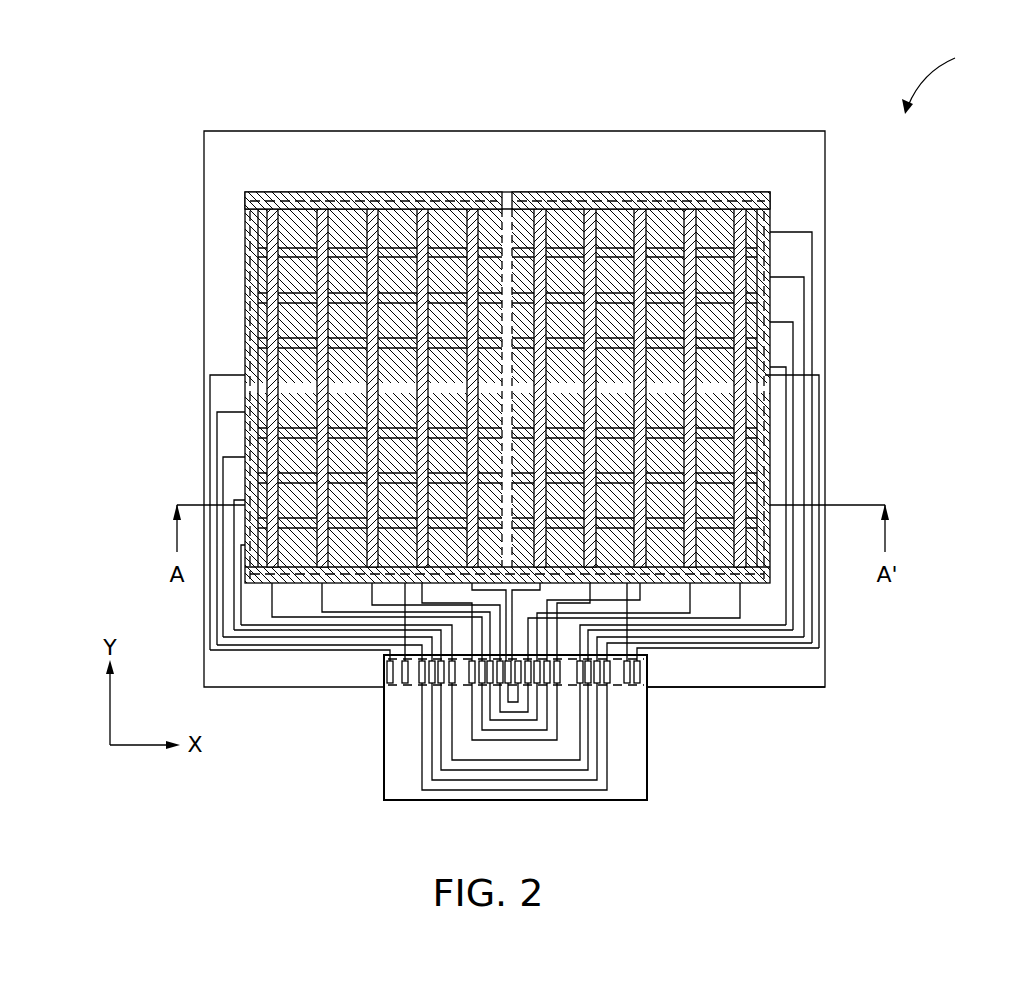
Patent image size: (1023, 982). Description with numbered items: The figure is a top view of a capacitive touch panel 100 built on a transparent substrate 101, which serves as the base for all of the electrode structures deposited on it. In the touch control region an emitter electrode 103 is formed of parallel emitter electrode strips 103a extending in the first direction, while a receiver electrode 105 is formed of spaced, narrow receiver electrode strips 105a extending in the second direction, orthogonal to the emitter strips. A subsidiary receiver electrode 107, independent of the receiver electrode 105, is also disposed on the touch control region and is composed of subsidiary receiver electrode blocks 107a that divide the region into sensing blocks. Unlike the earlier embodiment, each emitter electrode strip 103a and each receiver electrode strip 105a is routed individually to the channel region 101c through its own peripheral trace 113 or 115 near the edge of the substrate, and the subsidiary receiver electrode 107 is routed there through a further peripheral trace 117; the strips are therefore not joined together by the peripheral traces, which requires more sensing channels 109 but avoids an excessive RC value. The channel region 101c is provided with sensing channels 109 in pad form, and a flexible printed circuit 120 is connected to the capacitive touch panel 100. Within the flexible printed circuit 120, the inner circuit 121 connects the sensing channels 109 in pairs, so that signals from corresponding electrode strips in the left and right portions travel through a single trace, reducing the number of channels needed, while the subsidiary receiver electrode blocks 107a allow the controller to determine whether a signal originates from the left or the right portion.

The capacitive touch panel 100 is at (951, 77).
The transparent substrate 101 is at (832, 664).
The channel region 101c is at (655, 695).
The emitter electrode 103 is at (563, 503).
The emitter electrode strip 103a is at (740, 548).
The receiver electrode 105 is at (422, 387).
The receiver electrode strip 105a is at (370, 322).
The subsidiary receiver electrode 107 is at (507, 123).
The subsidiary receiver electrode block 107a is at (612, 80).
The sensing channel 109 is at (490, 688).
The peripheral trace 113 is at (322, 612).
The peripheral trace 115 is at (382, 613).
The peripheral trace 117 is at (243, 653).
The flexible printed circuit 120 is at (637, 792).
The inner circuit 121 is at (532, 730).